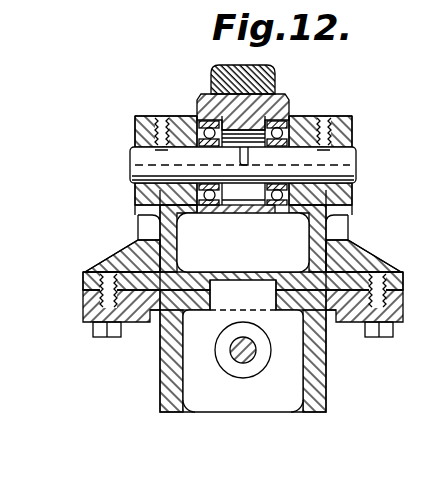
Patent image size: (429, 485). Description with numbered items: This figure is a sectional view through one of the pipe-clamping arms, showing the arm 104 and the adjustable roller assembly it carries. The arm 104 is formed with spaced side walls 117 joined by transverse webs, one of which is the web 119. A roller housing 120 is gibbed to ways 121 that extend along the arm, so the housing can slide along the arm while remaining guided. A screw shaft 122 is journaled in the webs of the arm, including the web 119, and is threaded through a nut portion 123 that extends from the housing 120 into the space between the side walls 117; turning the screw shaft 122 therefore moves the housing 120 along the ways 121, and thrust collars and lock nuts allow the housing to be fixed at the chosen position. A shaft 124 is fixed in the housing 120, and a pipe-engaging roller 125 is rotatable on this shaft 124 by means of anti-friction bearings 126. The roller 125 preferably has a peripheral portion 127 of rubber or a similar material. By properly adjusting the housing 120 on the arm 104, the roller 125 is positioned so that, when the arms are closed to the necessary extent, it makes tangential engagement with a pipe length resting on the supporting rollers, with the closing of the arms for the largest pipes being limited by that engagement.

The arm 104 is at (318, 381).
The side walls 117 is at (186, 410).
The transverse web 119 is at (250, 408).
The roller housing 120 is at (158, 238).
The ways 121 is at (163, 327).
The screw shaft 122 is at (233, 352).
The nut portion 123 is at (232, 370).
The shaft 124 is at (332, 158).
The pipe-engaging roller 125 is at (258, 101).
The anti-friction bearings 126 is at (200, 114).
The peripheral portion 127 is at (268, 76).